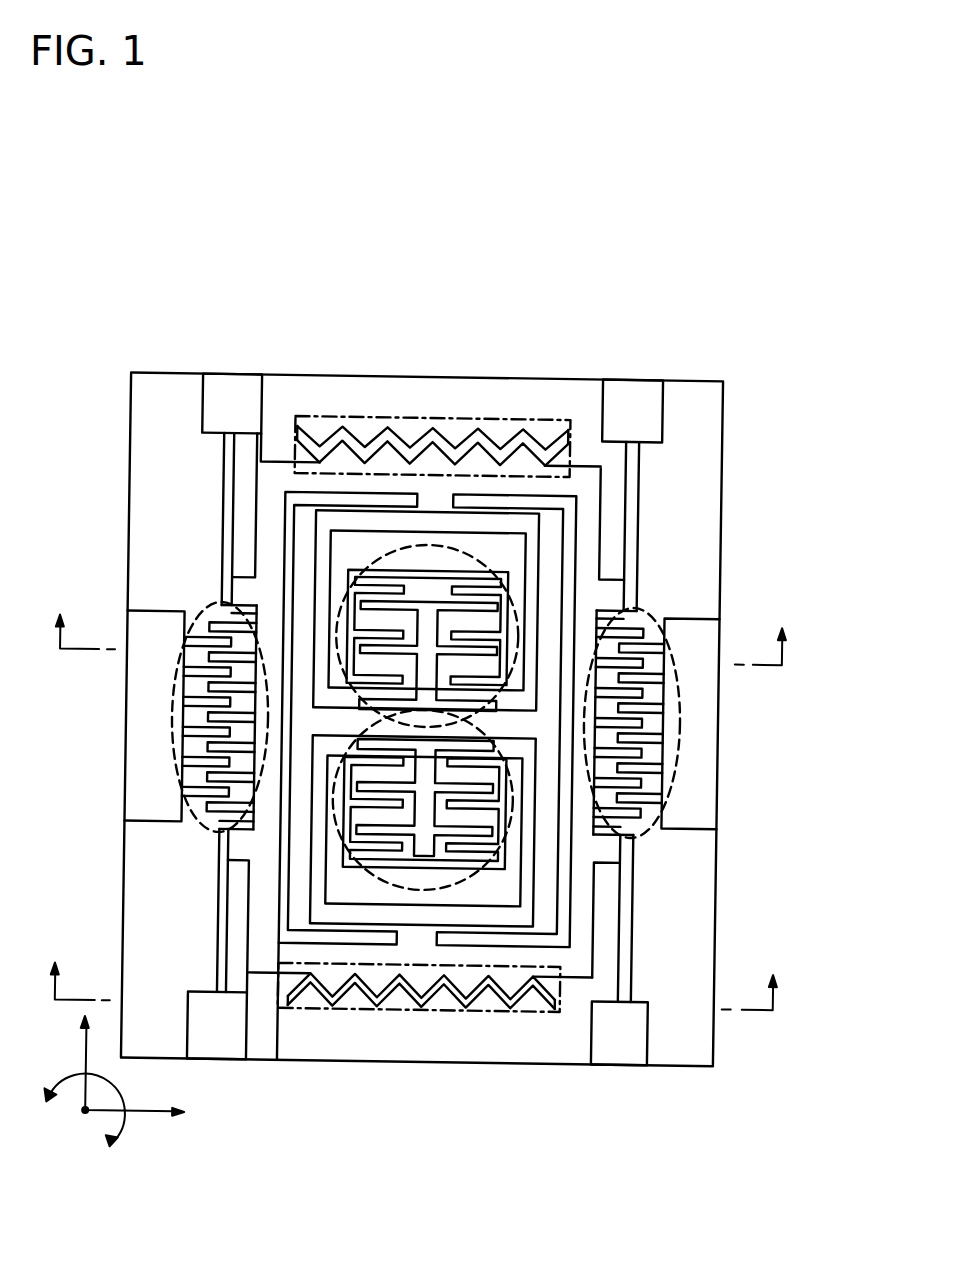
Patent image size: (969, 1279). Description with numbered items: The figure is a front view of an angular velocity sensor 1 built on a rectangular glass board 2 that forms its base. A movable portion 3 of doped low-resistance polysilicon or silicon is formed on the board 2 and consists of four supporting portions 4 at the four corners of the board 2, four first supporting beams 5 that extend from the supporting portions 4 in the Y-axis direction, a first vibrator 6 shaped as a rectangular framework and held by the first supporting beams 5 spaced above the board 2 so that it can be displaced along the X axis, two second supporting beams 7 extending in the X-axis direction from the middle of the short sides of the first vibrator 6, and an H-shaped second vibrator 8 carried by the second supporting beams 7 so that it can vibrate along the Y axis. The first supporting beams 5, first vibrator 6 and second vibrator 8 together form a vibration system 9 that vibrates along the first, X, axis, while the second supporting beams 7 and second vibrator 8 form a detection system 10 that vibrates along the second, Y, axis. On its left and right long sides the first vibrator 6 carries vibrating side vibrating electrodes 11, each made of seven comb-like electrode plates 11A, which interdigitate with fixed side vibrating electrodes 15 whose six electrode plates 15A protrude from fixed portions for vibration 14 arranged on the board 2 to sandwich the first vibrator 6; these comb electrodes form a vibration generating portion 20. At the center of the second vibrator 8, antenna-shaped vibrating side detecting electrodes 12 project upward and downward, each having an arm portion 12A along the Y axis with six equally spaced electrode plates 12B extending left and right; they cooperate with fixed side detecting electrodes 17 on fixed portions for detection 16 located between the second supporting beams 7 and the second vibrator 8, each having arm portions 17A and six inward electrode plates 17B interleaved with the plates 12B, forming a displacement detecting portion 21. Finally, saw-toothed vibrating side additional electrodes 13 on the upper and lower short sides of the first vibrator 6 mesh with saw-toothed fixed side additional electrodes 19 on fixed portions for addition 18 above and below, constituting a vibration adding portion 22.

The angular velocity sensor 1 is at (425, 685).
The board 2 is at (690, 1066).
The movable portion 3 is at (212, 557).
The supporting portion 4 is at (628, 378).
The first supporting beam 5 is at (216, 463).
The first vibrator 6 is at (581, 965).
The second supporting beam 7 is at (441, 699).
The second vibrator 8 is at (550, 543).
The vibration system 9 is at (610, 505).
The detection system 10 is at (467, 960).
The vibrating side vibrating electrode 11 is at (620, 829).
The electrode plate 11A is at (188, 644).
The vibrating side detecting electrode 12 is at (480, 566).
The arm portion 12A is at (417, 838).
The electrode plate 12B is at (375, 604).
The vibrating side additional electrode 13 is at (436, 427).
The fixed portion for vibration 14 is at (428, 719).
The fixed side vibrating electrode 15 is at (430, 725).
The electrode plate 15A is at (179, 699).
The fixed portion for detection 16 is at (338, 541).
The fixed side detecting electrode 17 is at (516, 590).
The arm portion 17A is at (311, 710).
The electrode plate 17B is at (354, 859).
The fixed portion for addition 18 is at (305, 1060).
The fixed side additional electrode 19 is at (518, 445).
The vibration generating portion 20 is at (174, 766).
The displacement detecting portion 21 is at (395, 548).
The vibration adding portion 22 is at (472, 417).